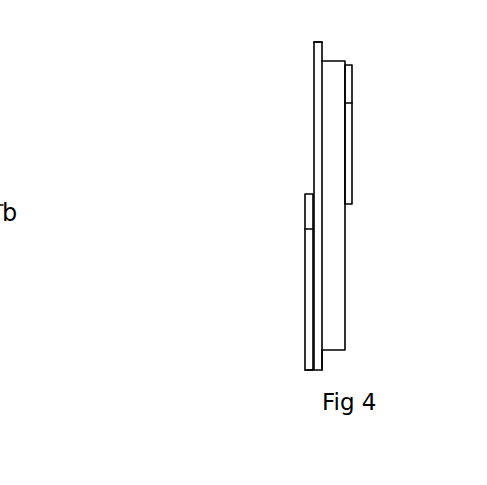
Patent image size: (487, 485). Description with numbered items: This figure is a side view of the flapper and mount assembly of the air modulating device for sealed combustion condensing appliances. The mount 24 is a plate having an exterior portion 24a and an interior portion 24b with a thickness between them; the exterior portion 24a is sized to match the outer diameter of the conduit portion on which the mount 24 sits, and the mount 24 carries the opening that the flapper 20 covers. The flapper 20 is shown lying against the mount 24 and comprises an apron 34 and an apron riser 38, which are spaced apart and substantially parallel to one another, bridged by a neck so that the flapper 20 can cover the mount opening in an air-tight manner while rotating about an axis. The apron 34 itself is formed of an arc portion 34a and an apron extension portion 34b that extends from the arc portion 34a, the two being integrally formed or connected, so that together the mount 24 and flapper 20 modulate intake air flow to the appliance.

The flapper 20 is at (346, 143).
The mount 24 is at (313, 163).
The exterior portion 24a is at (308, 82).
The interior portion 24b is at (356, 327).
The apron 34 is at (310, 303).
The arc portion 34a is at (310, 348).
The apron extension portion 34b is at (312, 212).
The apron riser 38 is at (352, 118).